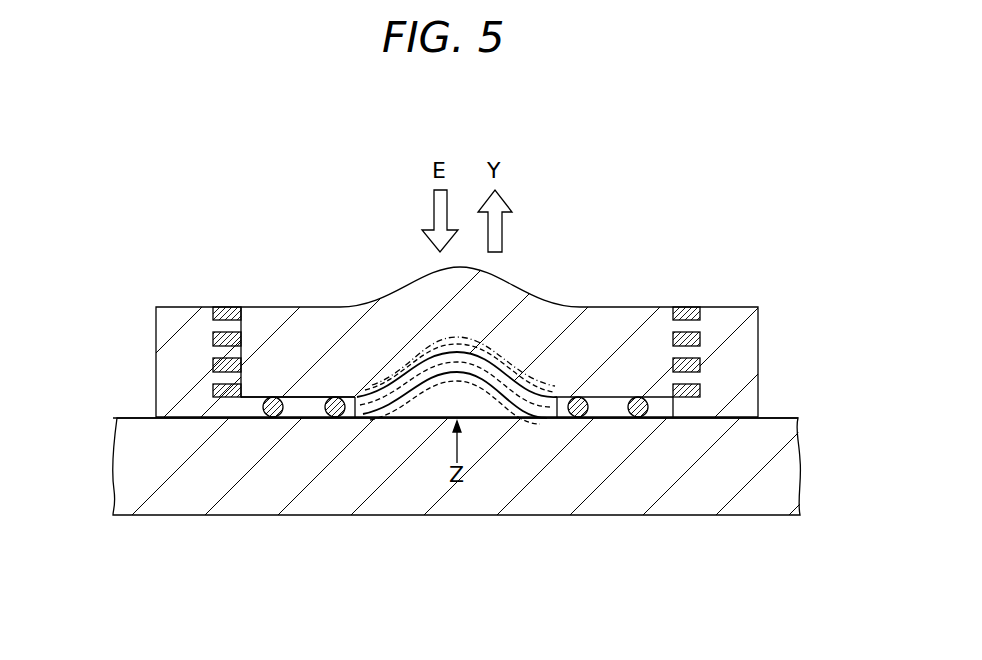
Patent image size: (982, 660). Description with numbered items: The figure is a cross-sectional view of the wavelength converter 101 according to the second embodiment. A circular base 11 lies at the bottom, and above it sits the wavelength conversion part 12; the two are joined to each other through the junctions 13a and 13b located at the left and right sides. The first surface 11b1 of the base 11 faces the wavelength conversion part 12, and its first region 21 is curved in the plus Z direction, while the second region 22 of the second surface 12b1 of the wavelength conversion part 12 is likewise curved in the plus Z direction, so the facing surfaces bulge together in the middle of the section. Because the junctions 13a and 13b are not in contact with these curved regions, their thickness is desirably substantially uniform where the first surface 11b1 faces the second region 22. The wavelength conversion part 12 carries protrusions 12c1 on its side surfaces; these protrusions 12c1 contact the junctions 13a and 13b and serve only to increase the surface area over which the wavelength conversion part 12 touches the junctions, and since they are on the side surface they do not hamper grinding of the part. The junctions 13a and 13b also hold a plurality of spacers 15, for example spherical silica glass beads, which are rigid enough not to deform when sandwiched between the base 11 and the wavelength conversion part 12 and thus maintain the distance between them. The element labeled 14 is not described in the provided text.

The wavelength converter 101 is at (718, 114).
The base 11 is at (786, 458).
The first surface 11b1 is at (128, 416).
The wavelength conversion part 12 is at (598, 326).
The second surface 12b1 is at (320, 396).
The protrusions 12c1 is at (213, 367).
The junction 13a is at (175, 327).
The junction 13b is at (745, 369).
The deformable membrane 14 is at (362, 412).
The spacers 15 is at (335, 420).
The first region 21 is at (408, 405).
The second region 22 is at (394, 366).